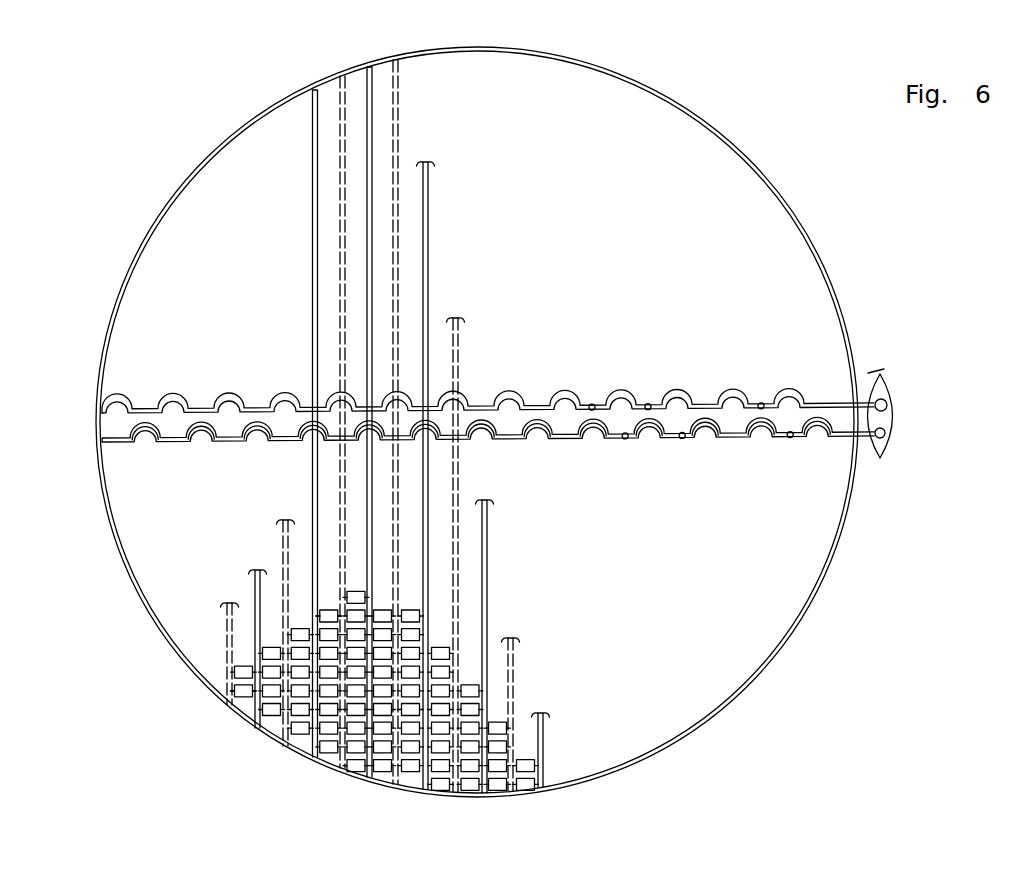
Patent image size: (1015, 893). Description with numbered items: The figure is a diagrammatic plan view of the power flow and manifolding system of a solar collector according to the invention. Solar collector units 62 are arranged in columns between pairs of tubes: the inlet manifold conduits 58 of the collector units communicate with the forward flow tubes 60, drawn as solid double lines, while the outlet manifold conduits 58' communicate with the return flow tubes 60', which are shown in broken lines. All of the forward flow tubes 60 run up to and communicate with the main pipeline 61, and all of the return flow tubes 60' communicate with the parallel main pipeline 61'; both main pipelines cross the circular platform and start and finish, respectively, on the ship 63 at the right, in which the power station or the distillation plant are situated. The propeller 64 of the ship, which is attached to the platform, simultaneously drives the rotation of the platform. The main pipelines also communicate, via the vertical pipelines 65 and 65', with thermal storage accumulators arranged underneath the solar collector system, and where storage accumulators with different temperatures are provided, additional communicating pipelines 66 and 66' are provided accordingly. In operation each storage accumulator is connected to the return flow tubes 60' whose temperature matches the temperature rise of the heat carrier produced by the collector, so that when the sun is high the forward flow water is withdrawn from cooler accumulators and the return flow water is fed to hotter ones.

The inlet manifold conduits 58 is at (383, 647).
The outlet manifold conduits 58' is at (290, 536).
The forward flow tubes 60 is at (410, 430).
The return flow tubes 60' is at (398, 426).
The main pipeline 61 is at (487, 372).
The main pipeline 61' is at (488, 464).
The solar collector units 62 is at (246, 692).
The ship 63 is at (887, 396).
The propeller 64 is at (878, 371).
The vertical pipeline 65 is at (653, 368).
The vertical pipeline 65' is at (664, 467).
The communicating pipeline 66 is at (773, 368).
The communicating pipeline 66' is at (773, 471).